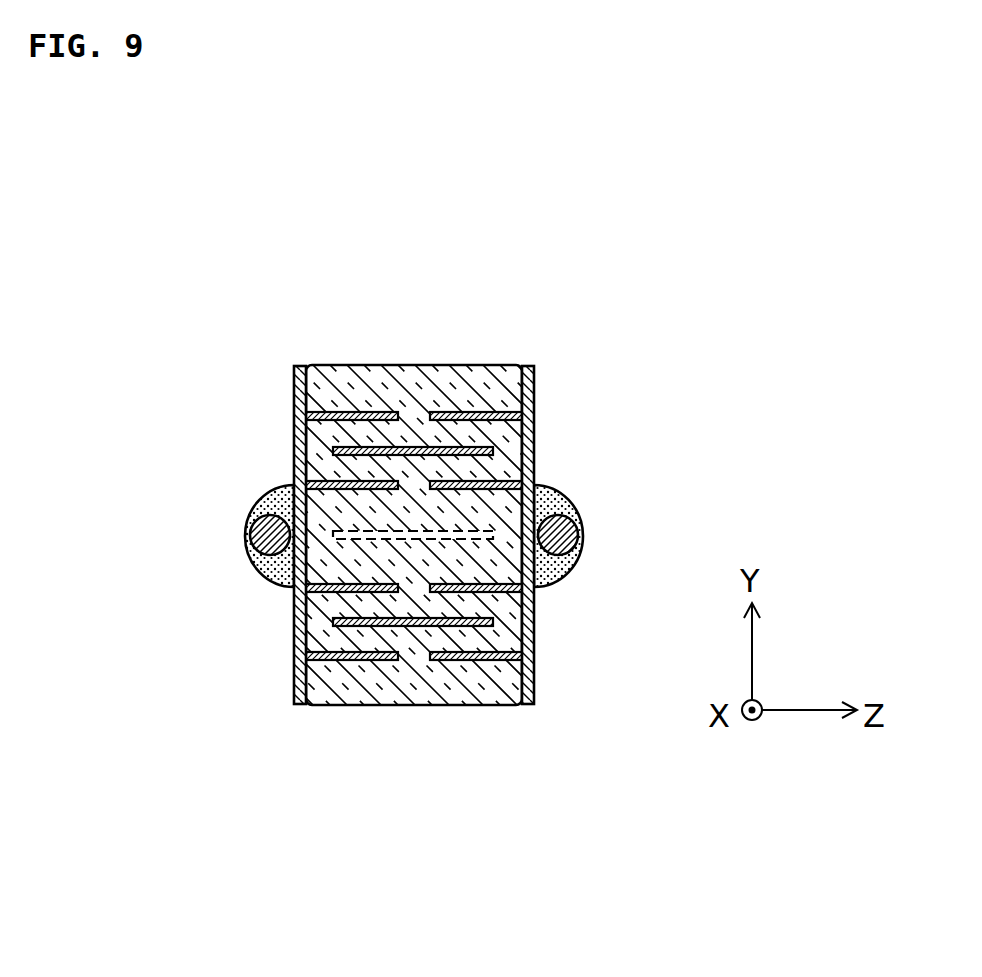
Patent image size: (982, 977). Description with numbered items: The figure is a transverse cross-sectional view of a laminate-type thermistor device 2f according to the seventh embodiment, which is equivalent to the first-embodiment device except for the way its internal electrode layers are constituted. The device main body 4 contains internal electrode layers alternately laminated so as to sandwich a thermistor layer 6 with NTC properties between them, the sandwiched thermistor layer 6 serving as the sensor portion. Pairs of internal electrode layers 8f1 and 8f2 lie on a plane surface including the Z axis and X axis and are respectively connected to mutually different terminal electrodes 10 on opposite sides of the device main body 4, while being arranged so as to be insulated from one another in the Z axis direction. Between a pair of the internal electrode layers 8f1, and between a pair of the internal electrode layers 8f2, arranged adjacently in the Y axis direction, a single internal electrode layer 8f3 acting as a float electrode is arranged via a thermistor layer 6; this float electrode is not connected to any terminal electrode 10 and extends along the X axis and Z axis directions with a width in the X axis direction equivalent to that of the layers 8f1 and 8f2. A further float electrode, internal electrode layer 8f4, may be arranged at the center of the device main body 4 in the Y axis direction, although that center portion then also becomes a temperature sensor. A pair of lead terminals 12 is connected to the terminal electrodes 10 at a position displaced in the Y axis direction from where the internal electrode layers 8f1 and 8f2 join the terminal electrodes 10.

The thermistor device 2f is at (428, 525).
The device main body 4 is at (399, 386).
The thermistor layer 6 is at (390, 549).
The internal electrode layer 8f1 is at (326, 410).
The internal electrode layer 8f2 is at (471, 402).
The internal electrode layer (float electrode) 8f3 is at (461, 447).
The internal electrode layer (float electrode) 8f4 is at (345, 542).
The terminal electrode 10 is at (294, 632).
The lead terminal 12 is at (250, 540).